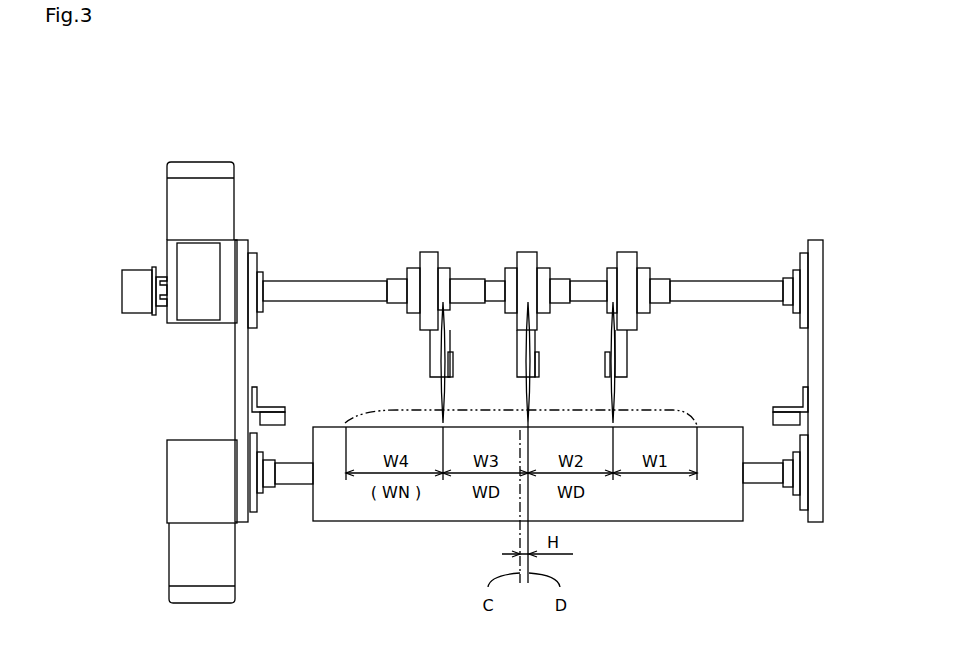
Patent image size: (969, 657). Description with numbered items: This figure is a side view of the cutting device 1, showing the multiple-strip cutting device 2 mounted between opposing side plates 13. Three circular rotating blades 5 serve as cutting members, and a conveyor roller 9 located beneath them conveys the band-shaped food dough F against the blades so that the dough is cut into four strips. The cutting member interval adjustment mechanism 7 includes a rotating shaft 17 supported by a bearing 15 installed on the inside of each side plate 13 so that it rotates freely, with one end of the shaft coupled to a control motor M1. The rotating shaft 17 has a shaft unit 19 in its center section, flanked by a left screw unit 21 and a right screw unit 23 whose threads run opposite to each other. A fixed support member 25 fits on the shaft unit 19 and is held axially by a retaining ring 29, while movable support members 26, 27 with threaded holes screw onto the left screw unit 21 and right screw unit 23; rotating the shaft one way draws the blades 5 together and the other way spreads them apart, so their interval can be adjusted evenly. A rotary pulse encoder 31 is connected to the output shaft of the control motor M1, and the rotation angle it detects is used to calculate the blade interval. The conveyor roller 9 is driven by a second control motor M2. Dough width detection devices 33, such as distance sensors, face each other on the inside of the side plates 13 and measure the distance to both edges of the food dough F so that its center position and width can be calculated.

The cutting device 1 is at (131, 109).
The multiple-strip cutting device 2 is at (265, 153).
The rotating blade 5 is at (447, 397).
The cutting member interval adjustment mechanism 7 is at (673, 204).
The conveyor roller 9 is at (693, 512).
The side plate 13 is at (242, 363).
The bearing 15 is at (270, 257).
The rotating shaft 17 is at (323, 288).
The shaft unit 19 is at (560, 278).
The left screw unit 21 is at (592, 278).
The right screw unit 23 is at (463, 285).
The fixed support member 25 is at (527, 255).
The movable support member 26 is at (628, 258).
The movable support member 27 is at (430, 255).
The retaining ring 29 is at (503, 300).
The pulse encoder 31 is at (140, 277).
The dough width detection device 33 is at (283, 406).
The control motor M1 is at (189, 212).
The control motor M2 is at (193, 556).
The food dough F is at (397, 416).